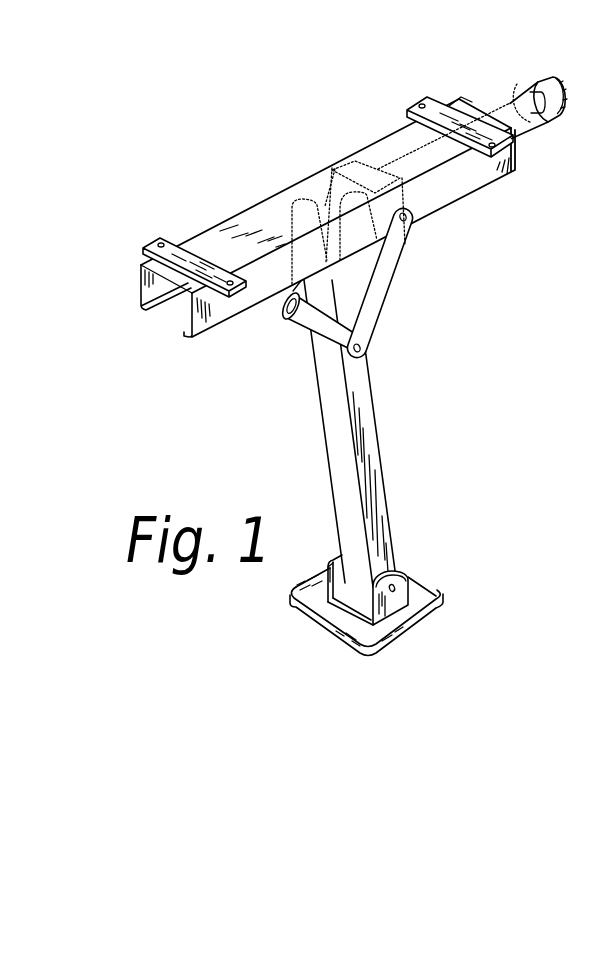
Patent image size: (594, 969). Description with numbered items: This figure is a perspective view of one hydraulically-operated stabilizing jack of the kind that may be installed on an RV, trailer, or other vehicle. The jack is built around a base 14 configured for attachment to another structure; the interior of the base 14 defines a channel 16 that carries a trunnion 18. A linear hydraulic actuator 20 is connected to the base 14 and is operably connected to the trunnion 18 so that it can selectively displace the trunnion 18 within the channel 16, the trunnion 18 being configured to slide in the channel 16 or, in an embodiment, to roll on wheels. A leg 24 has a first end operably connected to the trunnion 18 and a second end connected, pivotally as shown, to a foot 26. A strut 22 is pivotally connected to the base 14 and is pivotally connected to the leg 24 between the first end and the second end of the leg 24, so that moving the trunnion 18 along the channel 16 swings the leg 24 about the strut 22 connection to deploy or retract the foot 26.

The base 14 is at (250, 222).
The channel 16 is at (168, 318).
The trunnion 18 is at (305, 212).
The linear hydraulic actuator 20 is at (515, 112).
The strut 22 is at (382, 282).
The leg 24 is at (363, 400).
The foot 26 is at (417, 632).